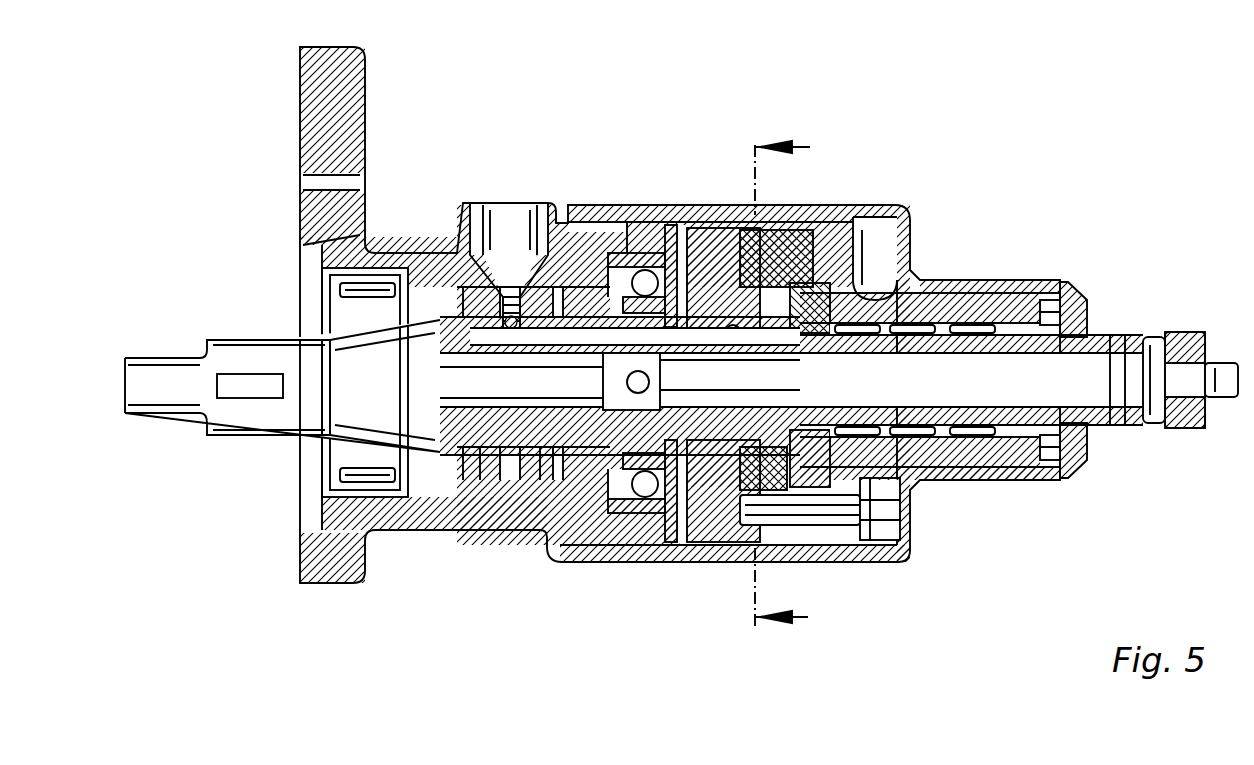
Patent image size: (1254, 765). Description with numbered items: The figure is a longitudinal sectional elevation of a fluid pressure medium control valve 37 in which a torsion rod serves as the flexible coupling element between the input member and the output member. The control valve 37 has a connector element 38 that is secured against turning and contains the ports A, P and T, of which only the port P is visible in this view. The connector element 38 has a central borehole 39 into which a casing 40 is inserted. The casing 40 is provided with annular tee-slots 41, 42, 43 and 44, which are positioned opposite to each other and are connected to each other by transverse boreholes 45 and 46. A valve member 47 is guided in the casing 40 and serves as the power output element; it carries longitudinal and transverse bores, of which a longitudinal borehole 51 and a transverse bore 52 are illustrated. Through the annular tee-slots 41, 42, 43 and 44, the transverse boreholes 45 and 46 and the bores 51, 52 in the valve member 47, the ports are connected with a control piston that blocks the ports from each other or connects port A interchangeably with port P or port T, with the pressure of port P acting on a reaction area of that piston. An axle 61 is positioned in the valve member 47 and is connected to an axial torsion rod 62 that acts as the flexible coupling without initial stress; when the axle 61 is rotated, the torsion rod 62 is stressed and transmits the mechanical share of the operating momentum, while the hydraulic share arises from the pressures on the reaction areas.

The control valve 37 is at (962, 118).
The connector element 38 is at (433, 272).
The port P is at (510, 200).
The central borehole 39 is at (600, 262).
The casing 40 is at (626, 253).
The annular tee-slot 41 is at (512, 485).
The annular tee-slot 42 is at (497, 487).
The annular tee-slot 43 is at (555, 487).
The annular tee-slot 44 is at (555, 480).
The transverse borehole 45 is at (546, 205).
The transverse borehole 46 is at (571, 287).
The valve member 47 is at (835, 250).
The longitudinal borehole 51 is at (690, 245).
The transverse bore 52 is at (803, 245).
The axle 61 is at (1135, 330).
The torsion rod 62 is at (1048, 282).